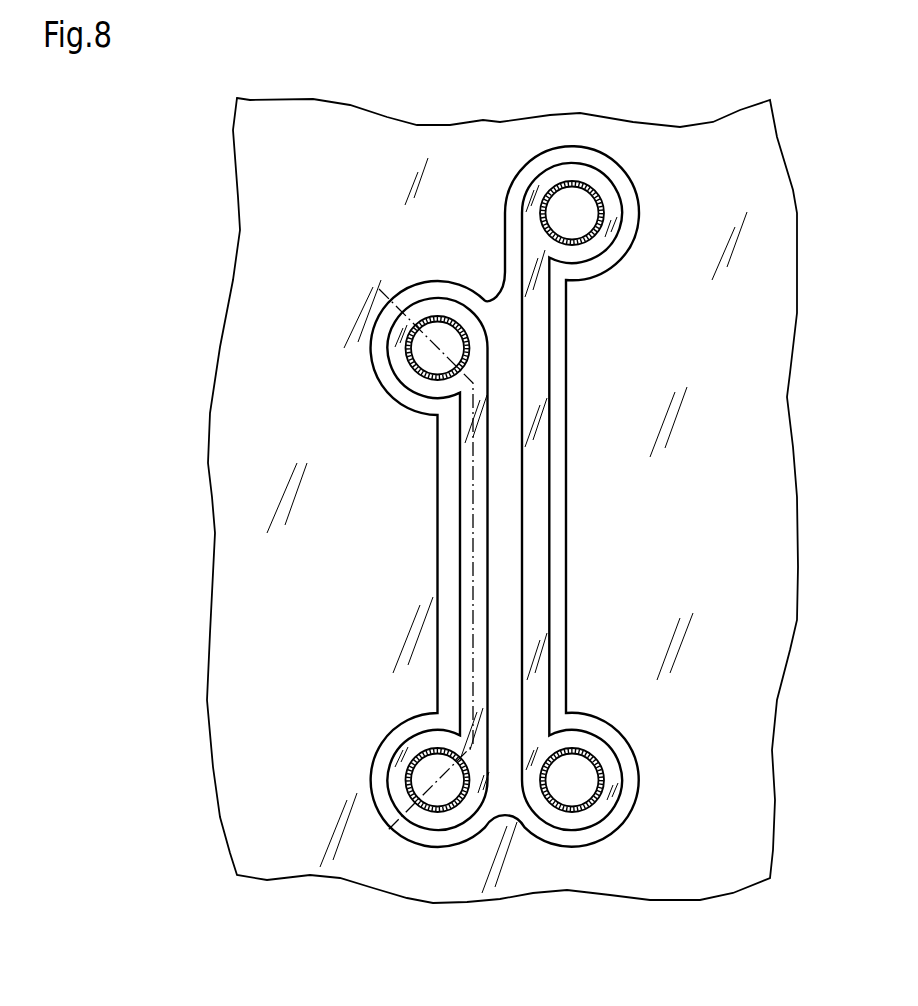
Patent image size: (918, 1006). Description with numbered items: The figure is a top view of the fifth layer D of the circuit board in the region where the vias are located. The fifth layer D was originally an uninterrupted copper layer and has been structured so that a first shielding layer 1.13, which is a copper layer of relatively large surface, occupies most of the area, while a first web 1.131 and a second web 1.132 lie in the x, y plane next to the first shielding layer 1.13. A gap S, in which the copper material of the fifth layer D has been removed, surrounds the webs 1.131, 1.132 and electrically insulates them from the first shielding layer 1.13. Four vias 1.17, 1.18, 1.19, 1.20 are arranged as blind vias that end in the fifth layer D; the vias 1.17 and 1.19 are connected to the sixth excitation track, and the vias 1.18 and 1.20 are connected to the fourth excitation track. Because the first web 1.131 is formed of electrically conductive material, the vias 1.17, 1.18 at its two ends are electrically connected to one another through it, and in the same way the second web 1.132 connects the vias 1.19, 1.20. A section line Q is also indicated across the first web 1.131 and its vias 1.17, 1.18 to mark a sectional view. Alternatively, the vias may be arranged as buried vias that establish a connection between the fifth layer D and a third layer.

The first shielding layer 1.13 is at (502, 500).
The first web 1.131 is at (470, 522).
The second web 1.132 is at (537, 526).
The via 1.17 is at (408, 365).
The via 1.18 is at (407, 785).
The via 1.19 is at (603, 213).
The via 1.20 is at (602, 777).
The gap S is at (453, 697).
The section line Q- Q is at (413, 268).
The fifth layer D is at (750, 860).